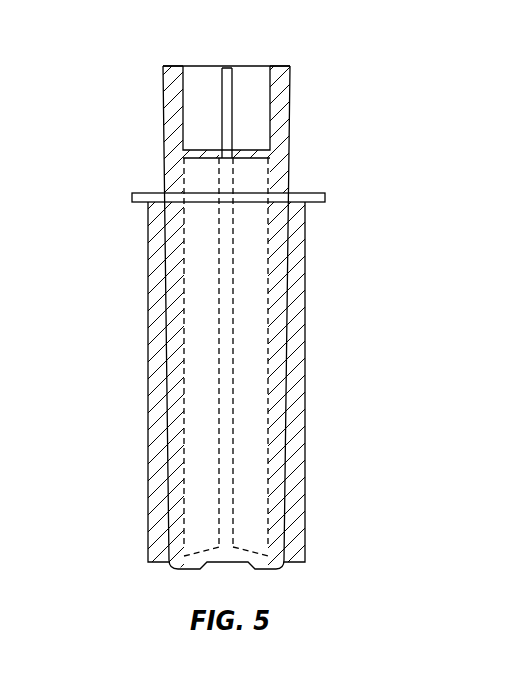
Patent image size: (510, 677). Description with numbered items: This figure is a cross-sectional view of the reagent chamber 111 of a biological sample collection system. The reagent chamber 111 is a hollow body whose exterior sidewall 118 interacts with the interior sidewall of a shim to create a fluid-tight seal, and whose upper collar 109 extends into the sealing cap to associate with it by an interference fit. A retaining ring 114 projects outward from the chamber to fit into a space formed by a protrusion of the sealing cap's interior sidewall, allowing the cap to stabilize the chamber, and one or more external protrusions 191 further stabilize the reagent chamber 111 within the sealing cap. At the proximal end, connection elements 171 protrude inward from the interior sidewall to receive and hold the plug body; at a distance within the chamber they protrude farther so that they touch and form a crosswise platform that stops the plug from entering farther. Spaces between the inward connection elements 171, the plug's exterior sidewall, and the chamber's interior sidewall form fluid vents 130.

The reagent chamber 111 is at (98, 62).
The upper collar 109 is at (250, 413).
The exterior sidewall 118 is at (290, 137).
The fluid vents 130 is at (261, 55).
The retaining ring 114 is at (325, 194).
The external protrusions 191 is at (222, 372).
The connection elements 171 is at (270, 87).